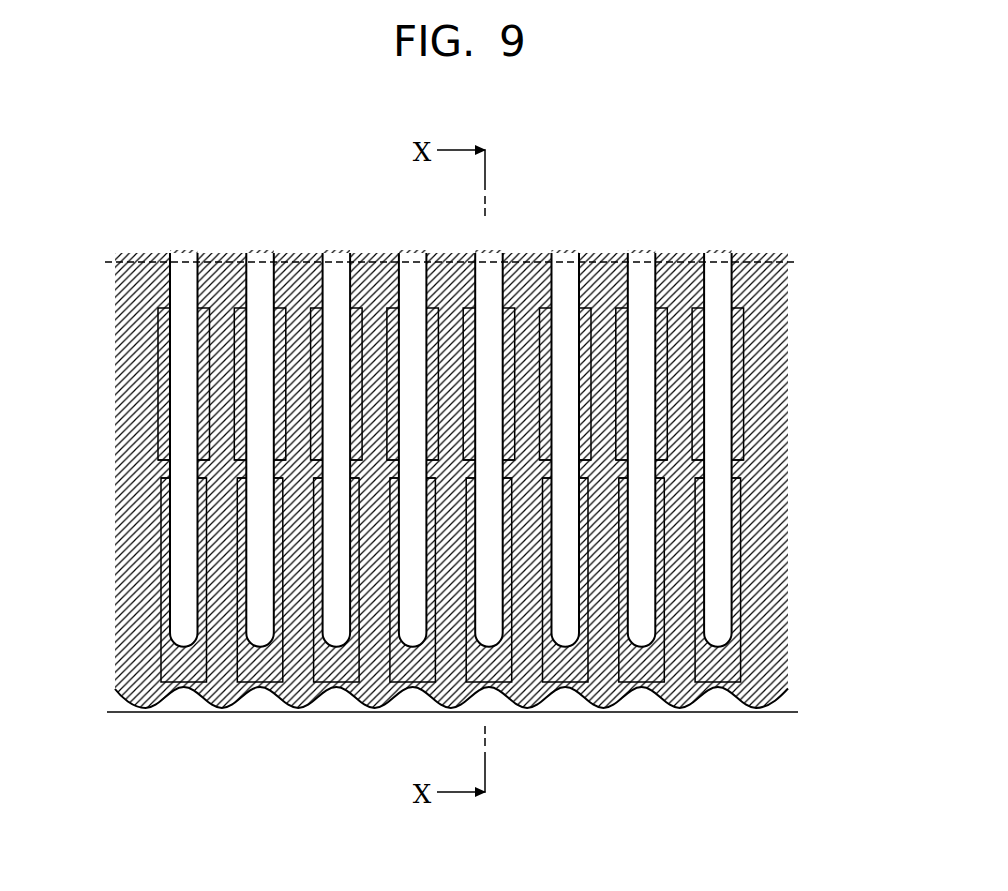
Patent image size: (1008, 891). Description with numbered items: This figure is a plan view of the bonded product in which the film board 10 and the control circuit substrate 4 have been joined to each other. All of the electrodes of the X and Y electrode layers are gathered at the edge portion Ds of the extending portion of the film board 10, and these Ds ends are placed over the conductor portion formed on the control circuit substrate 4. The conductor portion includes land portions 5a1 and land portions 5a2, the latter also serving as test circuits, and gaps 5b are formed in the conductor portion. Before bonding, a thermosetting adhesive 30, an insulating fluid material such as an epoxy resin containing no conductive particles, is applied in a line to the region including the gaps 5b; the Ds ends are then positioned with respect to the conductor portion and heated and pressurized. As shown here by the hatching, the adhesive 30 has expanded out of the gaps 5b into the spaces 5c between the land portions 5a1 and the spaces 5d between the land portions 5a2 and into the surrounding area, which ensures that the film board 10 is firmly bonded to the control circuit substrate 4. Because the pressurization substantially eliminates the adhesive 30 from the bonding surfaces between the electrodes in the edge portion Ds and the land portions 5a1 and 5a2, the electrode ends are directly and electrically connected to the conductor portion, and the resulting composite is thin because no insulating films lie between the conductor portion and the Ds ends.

The control circuit substrate 4 is at (758, 255).
The land portions 5a1 is at (163, 578).
The land portions 5a2 is at (162, 378).
The gaps 5b is at (162, 471).
The spaces 5c is at (218, 668).
The spaces 5d is at (219, 323).
The film board 10 is at (719, 722).
The thermosetting adhesive 30 is at (148, 657).
The edge portion Ds is at (184, 272).